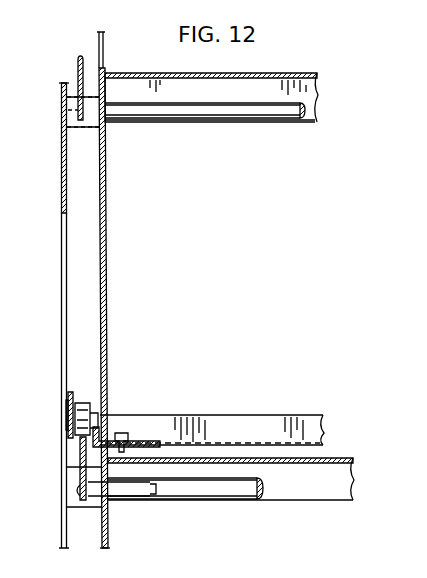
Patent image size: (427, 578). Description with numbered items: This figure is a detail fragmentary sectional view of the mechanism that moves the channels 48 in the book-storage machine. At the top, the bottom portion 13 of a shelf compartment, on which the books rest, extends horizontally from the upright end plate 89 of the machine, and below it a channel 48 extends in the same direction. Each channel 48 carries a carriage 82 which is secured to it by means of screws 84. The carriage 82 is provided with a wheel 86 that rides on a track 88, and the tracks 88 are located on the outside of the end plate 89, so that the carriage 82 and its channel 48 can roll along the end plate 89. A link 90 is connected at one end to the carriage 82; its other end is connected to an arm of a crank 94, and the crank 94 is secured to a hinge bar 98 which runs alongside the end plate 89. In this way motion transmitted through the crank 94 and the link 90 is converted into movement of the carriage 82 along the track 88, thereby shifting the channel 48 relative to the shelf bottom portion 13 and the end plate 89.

The bottom portion 13 is at (163, 72).
The channel 48 is at (322, 427).
The carriage 82 is at (100, 438).
The screw 84 is at (119, 436).
The wheel 86 is at (87, 412).
The track 88 is at (77, 70).
The end plate 89 is at (104, 254).
The link 90 is at (70, 436).
The crank 94 is at (61, 174).
The hinge bar 98 is at (194, 119).